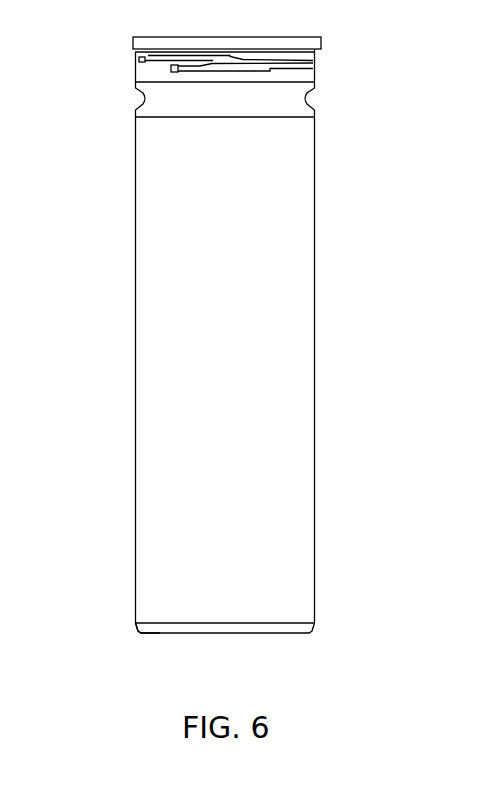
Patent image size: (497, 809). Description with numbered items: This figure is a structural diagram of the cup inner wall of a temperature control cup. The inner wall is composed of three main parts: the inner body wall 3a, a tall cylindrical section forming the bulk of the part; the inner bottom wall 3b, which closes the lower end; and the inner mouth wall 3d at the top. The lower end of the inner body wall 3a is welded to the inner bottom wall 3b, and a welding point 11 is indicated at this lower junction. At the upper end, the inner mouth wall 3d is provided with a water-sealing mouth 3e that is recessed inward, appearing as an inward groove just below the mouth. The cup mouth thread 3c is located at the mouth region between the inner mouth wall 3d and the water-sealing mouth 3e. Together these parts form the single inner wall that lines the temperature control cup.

The inner body wall 3a is at (317, 463).
The inner bottom wall 3b is at (297, 628).
The cup mouth thread 3c is at (143, 59).
The inner mouth wall 3d is at (312, 41).
The water-sealing mouth 3e is at (145, 99).
The welding point 11 is at (137, 628).